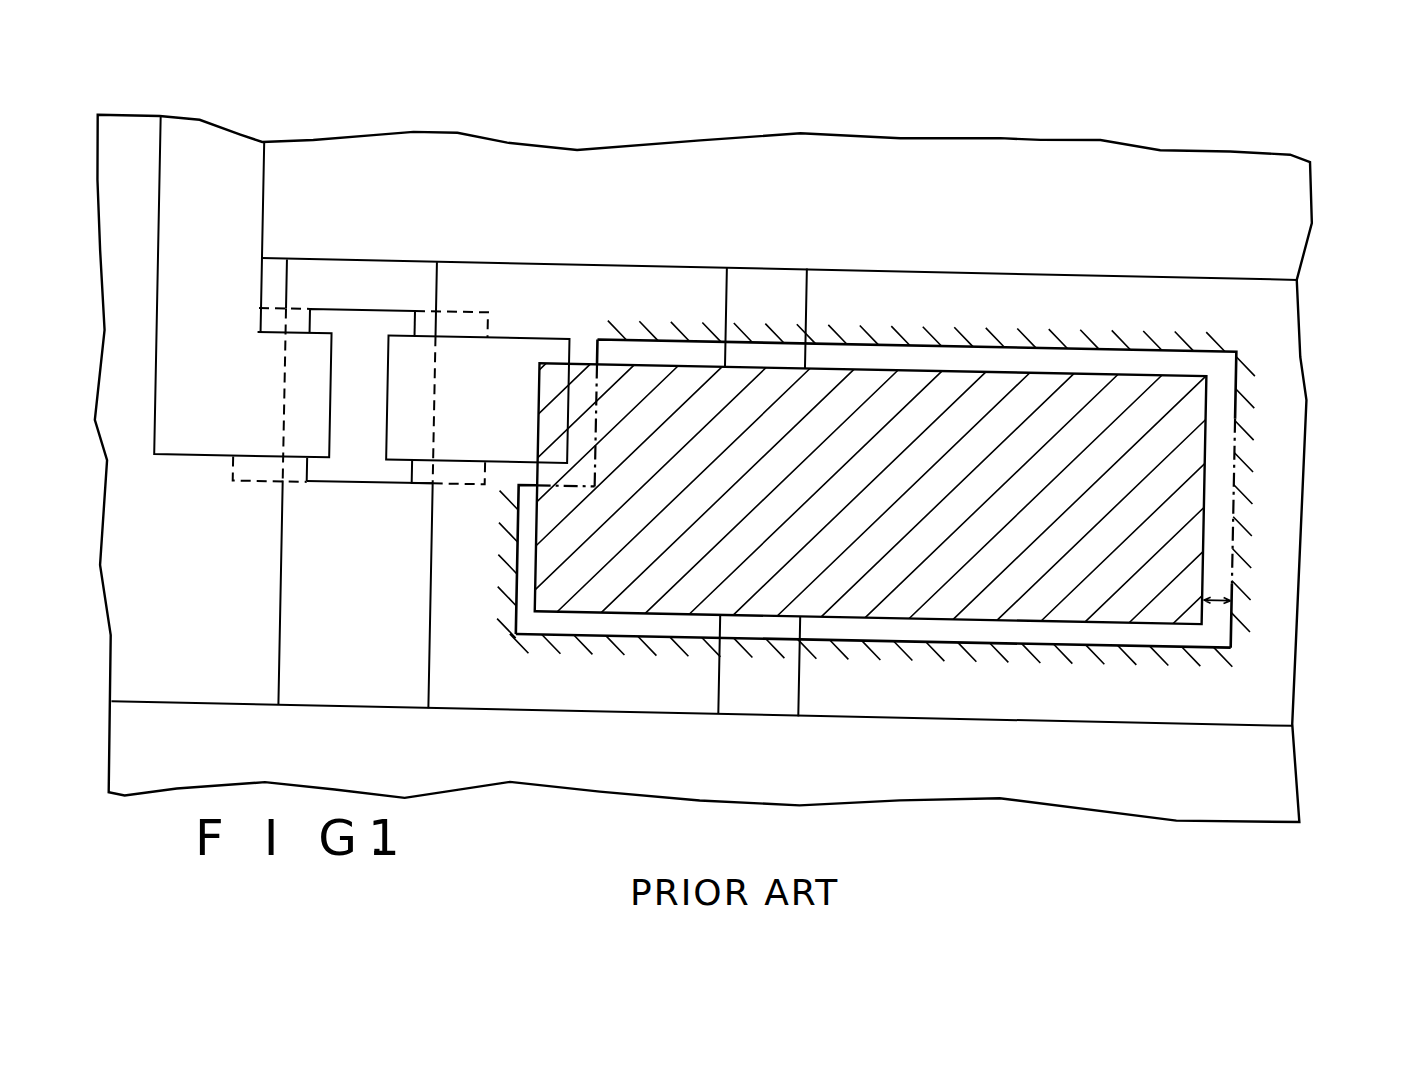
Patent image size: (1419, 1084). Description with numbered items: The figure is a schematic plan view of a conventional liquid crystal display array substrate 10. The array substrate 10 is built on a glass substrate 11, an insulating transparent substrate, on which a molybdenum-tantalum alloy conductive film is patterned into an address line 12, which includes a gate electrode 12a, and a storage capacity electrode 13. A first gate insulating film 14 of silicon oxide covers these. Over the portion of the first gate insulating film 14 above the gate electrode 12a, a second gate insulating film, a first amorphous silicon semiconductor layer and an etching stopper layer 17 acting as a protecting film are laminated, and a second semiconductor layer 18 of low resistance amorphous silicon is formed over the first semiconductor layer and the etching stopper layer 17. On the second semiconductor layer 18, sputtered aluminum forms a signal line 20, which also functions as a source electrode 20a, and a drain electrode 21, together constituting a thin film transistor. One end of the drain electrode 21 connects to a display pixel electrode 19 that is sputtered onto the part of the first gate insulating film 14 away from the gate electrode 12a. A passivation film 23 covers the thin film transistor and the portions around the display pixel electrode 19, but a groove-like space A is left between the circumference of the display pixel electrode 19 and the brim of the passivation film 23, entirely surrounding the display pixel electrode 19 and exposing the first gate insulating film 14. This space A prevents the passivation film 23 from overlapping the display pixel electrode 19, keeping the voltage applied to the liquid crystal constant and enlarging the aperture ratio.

The array substrate 10 is at (1343, 359).
The glass substrate 11 is at (1208, 157).
The address line 12 is at (380, 682).
The gate electrode 12a is at (423, 322).
The storage capacity electrode 13 is at (775, 687).
The first gate insulating film 14 is at (1104, 616).
The etching stopper layer 17 is at (362, 463).
The second semiconductor layer 18 is at (297, 469).
The display pixel electrode 19 is at (1045, 375).
The signal line 20 is at (178, 239).
The source electrode 20a is at (262, 463).
The drain electrode 21 is at (485, 431).
The passivation film 23 is at (675, 625).
The space A is at (1218, 585).